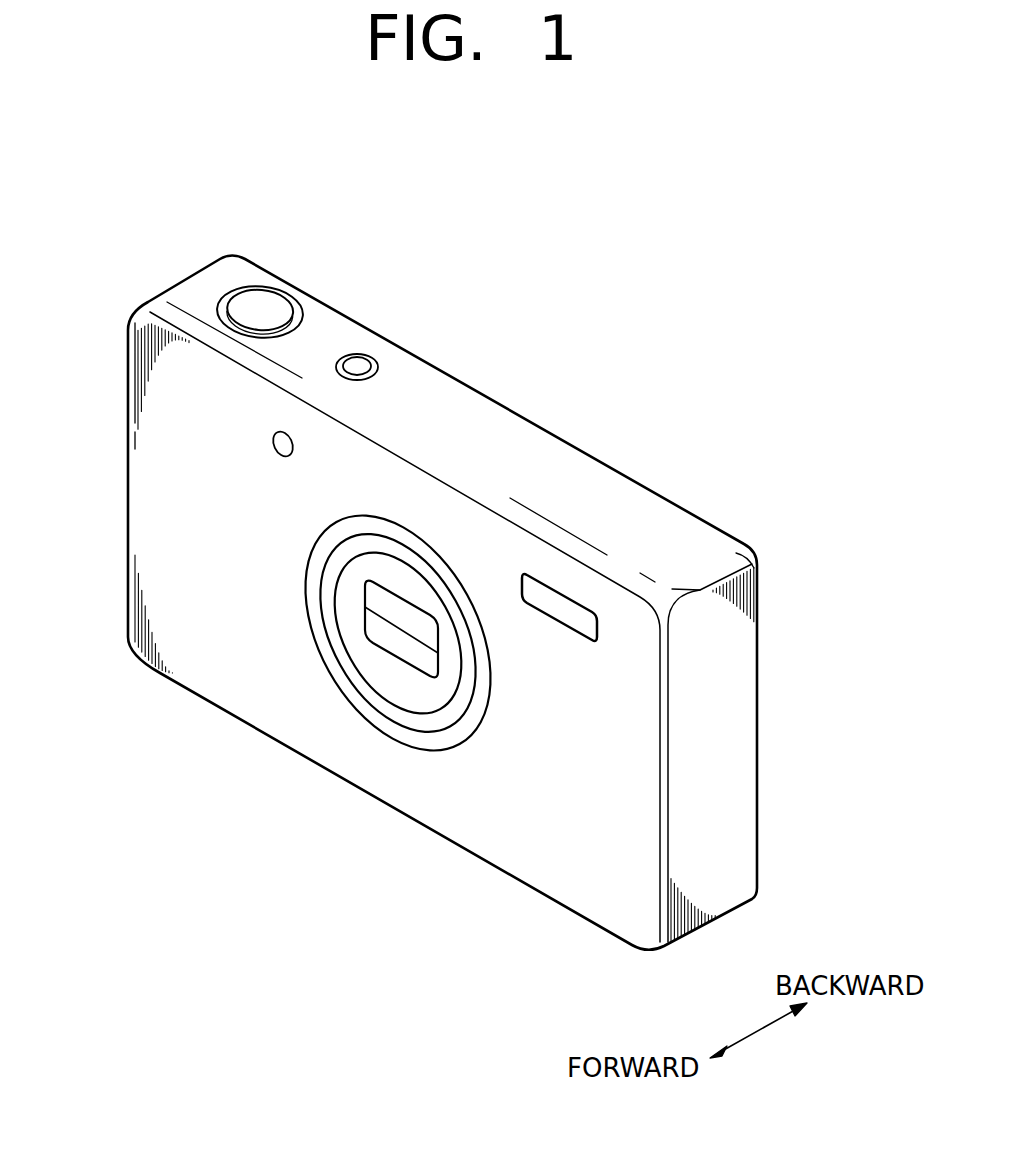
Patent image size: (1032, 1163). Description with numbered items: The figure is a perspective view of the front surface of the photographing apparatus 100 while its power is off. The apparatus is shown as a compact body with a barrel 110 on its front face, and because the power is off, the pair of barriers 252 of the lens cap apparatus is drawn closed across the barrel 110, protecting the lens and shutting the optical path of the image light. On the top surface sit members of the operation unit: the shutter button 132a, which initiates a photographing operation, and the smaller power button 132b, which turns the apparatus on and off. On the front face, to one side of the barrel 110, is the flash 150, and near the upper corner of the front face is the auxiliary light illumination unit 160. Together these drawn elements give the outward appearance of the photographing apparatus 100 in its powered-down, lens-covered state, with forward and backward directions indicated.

The photographing apparatus 100 is at (446, 562).
The barrel 110 is at (353, 753).
The shutter button 132a is at (267, 302).
The power button 132b is at (358, 363).
The flash 150 is at (558, 603).
The auxiliary light illumination unit 160 is at (278, 443).
The barriers 252 is at (393, 610).